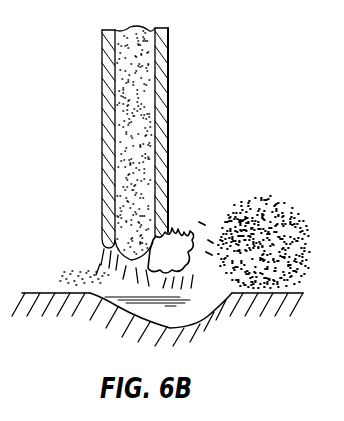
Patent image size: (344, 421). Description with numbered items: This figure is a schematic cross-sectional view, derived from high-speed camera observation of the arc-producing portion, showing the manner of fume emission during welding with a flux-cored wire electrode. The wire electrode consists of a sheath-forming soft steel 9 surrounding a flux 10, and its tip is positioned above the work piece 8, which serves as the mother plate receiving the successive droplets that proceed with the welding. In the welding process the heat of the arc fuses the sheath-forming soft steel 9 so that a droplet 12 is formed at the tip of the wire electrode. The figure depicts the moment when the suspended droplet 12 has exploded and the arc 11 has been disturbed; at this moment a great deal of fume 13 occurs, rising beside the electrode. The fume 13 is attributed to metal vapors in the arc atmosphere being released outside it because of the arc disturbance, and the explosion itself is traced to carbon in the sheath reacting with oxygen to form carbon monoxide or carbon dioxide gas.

The work piece 8 is at (99, 320).
The sheath-forming soft steel 9 is at (160, 129).
The flux 10 is at (130, 116).
The arc 11 is at (103, 254).
The droplet 12 is at (178, 233).
The fume 13 is at (264, 206).